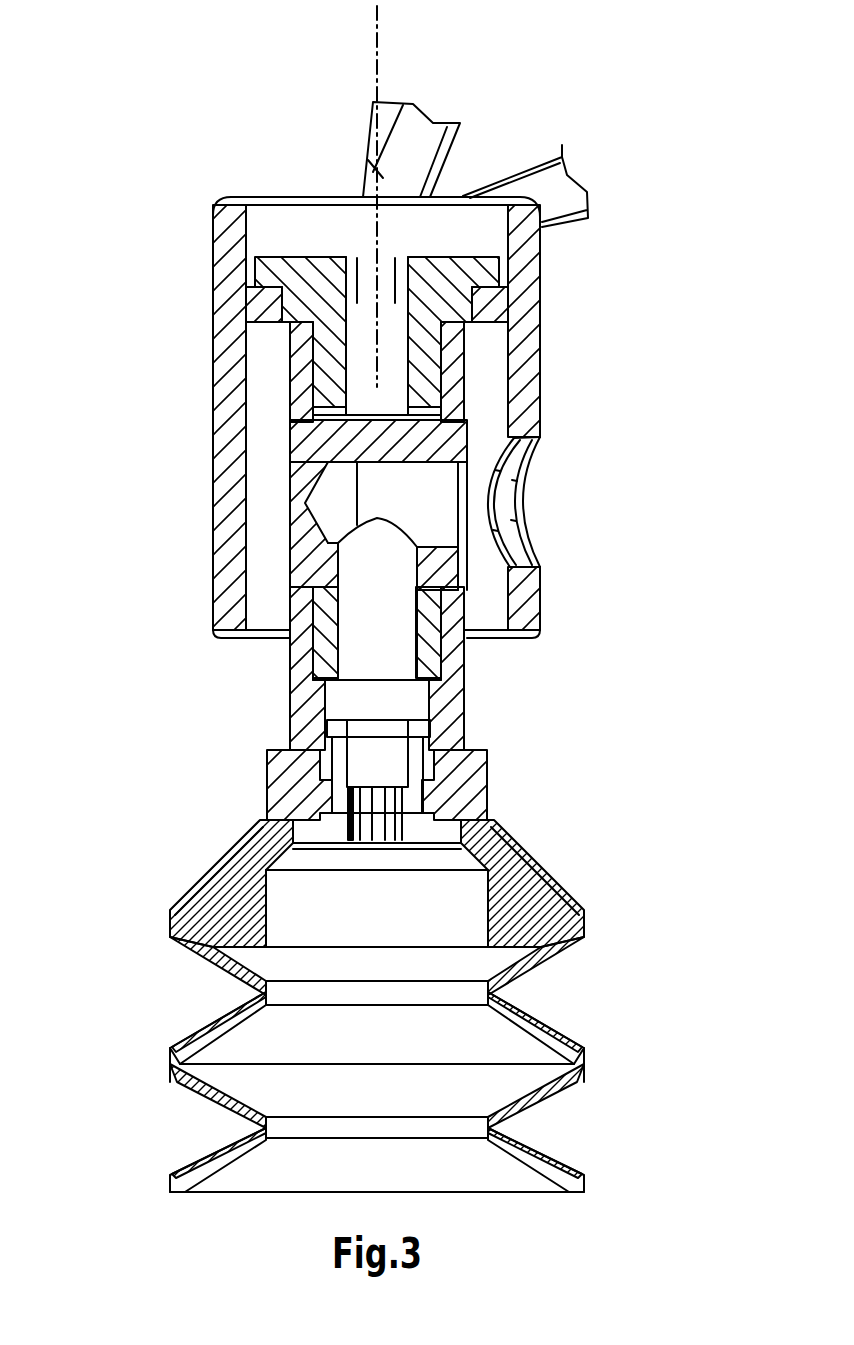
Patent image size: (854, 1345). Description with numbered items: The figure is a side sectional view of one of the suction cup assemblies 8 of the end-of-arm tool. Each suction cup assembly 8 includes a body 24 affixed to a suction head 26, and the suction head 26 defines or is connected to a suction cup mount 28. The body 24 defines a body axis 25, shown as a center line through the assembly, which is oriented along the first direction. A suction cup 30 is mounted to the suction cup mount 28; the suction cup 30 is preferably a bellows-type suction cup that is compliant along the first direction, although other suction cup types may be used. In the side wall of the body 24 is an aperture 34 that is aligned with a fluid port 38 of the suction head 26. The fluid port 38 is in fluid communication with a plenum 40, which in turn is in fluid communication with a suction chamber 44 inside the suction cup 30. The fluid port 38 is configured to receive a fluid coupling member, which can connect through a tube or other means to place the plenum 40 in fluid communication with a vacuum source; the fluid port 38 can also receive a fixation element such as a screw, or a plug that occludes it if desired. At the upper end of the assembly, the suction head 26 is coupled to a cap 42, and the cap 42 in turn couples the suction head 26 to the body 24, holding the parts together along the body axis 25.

The suction cup assembly 8 is at (146, 234).
The body 24 is at (215, 515).
The body axis 25 is at (377, 42).
The suction head 26 is at (315, 448).
The suction cup mount 28 is at (417, 776).
The suction cup 30 is at (547, 1100).
The aperture 34 is at (533, 556).
The fluid port 38 is at (407, 463).
The plenum 40 is at (345, 612).
The cap 42 is at (440, 295).
The suction chamber 44 is at (350, 1050).